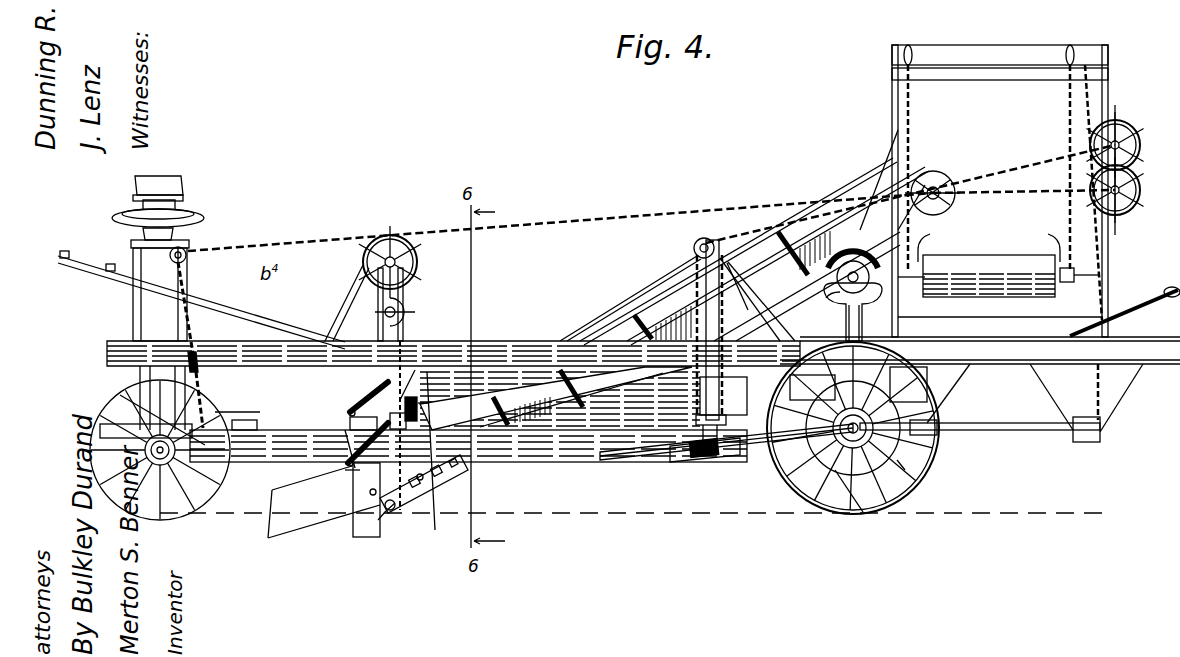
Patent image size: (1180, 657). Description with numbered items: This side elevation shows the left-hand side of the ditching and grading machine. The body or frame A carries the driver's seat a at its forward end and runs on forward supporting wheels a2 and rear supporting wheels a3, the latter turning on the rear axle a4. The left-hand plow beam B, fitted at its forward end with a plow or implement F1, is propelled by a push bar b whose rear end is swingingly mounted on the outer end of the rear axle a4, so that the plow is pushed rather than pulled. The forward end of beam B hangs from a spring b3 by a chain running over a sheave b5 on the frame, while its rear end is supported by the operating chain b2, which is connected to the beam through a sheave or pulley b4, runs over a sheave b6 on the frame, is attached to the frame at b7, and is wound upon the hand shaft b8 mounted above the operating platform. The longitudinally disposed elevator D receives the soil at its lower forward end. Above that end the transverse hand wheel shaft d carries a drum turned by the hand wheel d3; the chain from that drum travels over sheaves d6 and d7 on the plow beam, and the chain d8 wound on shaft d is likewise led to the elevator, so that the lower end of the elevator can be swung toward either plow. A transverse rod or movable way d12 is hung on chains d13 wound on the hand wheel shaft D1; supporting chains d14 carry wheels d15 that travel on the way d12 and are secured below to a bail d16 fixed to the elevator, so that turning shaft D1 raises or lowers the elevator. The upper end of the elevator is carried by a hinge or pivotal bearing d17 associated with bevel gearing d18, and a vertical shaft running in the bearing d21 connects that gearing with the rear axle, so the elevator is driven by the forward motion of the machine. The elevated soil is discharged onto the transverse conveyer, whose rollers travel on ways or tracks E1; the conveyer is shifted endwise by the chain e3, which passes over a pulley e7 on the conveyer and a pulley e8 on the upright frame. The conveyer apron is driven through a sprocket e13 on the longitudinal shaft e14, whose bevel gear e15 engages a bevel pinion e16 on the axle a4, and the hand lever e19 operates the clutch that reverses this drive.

The main frame A is at (508, 345).
The plow beam B is at (566, 454).
The elevator D is at (593, 341).
The transverse hand wheel shaft D1 is at (368, 318).
The transverse ways or tracks E1 is at (993, 341).
The shovel F1 is at (300, 502).
The driver's seat a is at (178, 220).
The forward supporting wheels a2 is at (215, 412).
The rear supporting wheels a3 is at (800, 478).
The rear axle a4 is at (853, 440).
The push bar b is at (745, 442).
The operating chain b2 is at (765, 222).
The spring b3 is at (197, 370).
The sheave or pulley b4 is at (700, 456).
The sheave or pulley b5 is at (188, 250).
The sheave or pulley b6 is at (698, 248).
The chain attachment point b7 is at (714, 240).
The hand shaft b8 is at (1125, 138).
The hand wheel shaft d is at (400, 258).
The hand wheel d3 is at (393, 245).
The sheave or pulley d6 is at (397, 410).
The sheave or pulley d7 is at (372, 508).
The chain d8 is at (405, 505).
The transverse rod or movable way d12 is at (412, 418).
The supporting chains d13 is at (395, 398).
The supporting chains d14 is at (437, 477).
The wheels d15 is at (470, 360).
The bail d16 is at (428, 470).
The hinge or pivotal bearing d17 is at (830, 288).
The bevel gearing d18 is at (860, 262).
The bearing d21 is at (846, 341).
The operating chain e3 is at (1080, 118).
The pulley e7 is at (1050, 258).
The pulley e8 is at (912, 50).
The sprocket e13 is at (1095, 442).
The longitudinally disposed shaft e14 is at (1025, 430).
The bevel gear e15 is at (925, 455).
The bevel pinion e16 is at (866, 508).
The hand lever e19 is at (1135, 320).